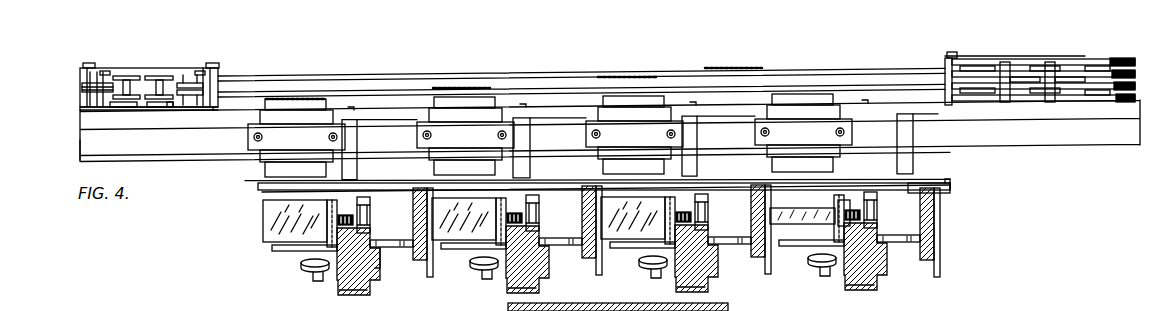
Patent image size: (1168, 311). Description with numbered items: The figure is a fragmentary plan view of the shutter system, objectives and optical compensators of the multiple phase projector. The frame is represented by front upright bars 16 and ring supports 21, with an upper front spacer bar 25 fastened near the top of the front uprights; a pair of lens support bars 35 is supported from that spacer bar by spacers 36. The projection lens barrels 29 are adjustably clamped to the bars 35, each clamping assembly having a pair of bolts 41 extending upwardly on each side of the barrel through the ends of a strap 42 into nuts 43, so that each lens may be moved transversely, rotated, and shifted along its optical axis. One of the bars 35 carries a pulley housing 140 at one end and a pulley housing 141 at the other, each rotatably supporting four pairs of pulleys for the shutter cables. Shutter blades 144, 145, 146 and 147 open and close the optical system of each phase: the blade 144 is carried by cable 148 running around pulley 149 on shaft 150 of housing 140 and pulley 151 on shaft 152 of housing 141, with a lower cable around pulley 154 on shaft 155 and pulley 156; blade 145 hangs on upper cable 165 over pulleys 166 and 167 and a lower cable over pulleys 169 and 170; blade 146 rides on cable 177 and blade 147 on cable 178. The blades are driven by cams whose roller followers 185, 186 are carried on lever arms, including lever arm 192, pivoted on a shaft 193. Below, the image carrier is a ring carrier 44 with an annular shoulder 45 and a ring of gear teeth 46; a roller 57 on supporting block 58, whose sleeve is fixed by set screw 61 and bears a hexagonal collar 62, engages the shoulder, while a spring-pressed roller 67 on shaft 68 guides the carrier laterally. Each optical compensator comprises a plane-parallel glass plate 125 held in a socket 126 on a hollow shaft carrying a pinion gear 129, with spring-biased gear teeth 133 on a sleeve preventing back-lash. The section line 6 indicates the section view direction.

The pulley housing 140 is at (80, 70).
The shaft 150 is at (115, 86).
The shaft 155 is at (178, 82).
The pulley 166 is at (80, 95).
The pulley 149 is at (112, 107).
The pulley 154 is at (169, 108).
The lens support bars 35 is at (82, 140).
The pulley 169 is at (215, 110).
The shutter blade 144 is at (292, 98).
The cable 148 is at (352, 94).
The upper cable 165 is at (394, 88).
The shutter blade 145 is at (453, 87).
The cable 177 is at (538, 77).
The spacers 36 is at (529, 158).
The shutter blade 146 is at (617, 76).
The shutter blade 147 is at (733, 67).
The cable 178 is at (775, 61).
The bolts 41 is at (426, 140).
The strap 42 is at (590, 140).
The nuts 43 is at (760, 142).
The lens barrel 29 is at (268, 170).
The supporting block 58 is at (918, 190).
The pulley housing 141 is at (945, 56).
The lever arm 192 is at (1010, 60).
The shaft 152 is at (1062, 62).
The shaft 193 is at (1082, 74).
The roller follower 185 is at (1100, 100).
The roller follower 186 is at (1122, 98).
The pulley 170 is at (980, 102).
The pulley 156 is at (1009, 98).
The pulley 151 is at (1043, 100).
The pulley 167 is at (1056, 98).
The upper front spacer bar 25 is at (948, 182).
The ring supports 21 is at (418, 266).
The front upright bars 16 is at (431, 264).
The socket 126 is at (270, 206).
The plane-parallel glass plate 125 is at (262, 226).
The gear teeth 133 is at (366, 212).
The ball-bearing roller 67 is at (300, 264).
The shaft 68 is at (312, 280).
The ring carrier 44 is at (335, 285).
The ring of gear teeth 46 is at (382, 272).
The section line 6 is at (489, 301).
The set screw 61 is at (603, 305).
The hexagonal collar 62 is at (496, 306).
The pinion gear 129 is at (700, 206).
The annular shoulder 45 is at (706, 262).
The roller 57 is at (856, 195).